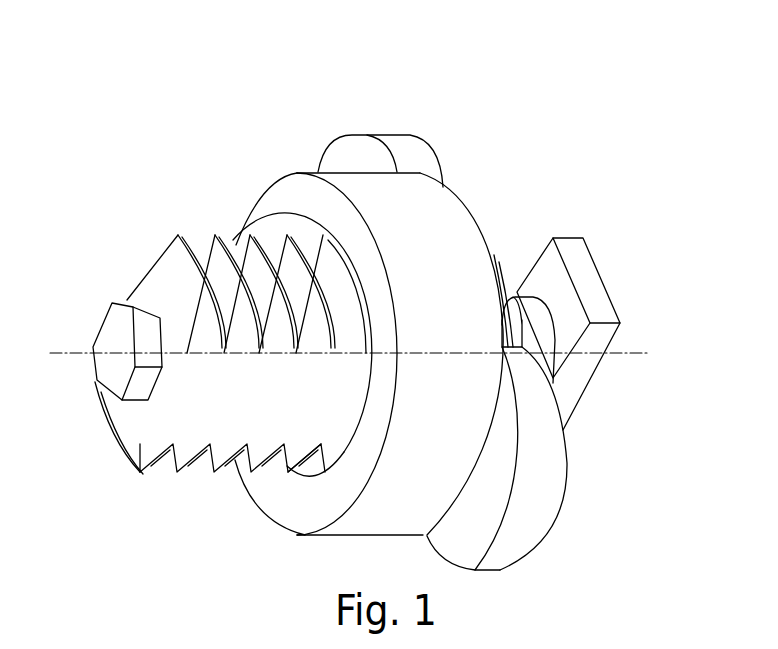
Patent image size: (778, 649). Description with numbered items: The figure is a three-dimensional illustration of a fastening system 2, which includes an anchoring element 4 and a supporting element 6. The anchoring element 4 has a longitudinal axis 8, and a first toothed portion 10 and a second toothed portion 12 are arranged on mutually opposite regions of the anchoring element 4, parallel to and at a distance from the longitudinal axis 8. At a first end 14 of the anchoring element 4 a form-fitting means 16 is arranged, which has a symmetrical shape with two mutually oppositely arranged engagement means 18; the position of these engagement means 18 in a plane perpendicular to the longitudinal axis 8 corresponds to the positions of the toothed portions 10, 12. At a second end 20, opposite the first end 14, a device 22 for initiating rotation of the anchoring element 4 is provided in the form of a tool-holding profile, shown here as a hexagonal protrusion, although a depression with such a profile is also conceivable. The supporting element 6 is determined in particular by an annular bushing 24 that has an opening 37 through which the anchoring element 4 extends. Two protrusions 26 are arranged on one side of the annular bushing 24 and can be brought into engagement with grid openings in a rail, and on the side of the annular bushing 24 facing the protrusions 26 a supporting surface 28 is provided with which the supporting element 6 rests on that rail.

The fastening system 2 is at (378, 87).
The anchoring element 4 is at (135, 297).
The supporting element 6 is at (457, 187).
The longitudinal axis 8 is at (637, 356).
The first toothed portion 10 is at (187, 354).
The second toothed portion 12 is at (143, 430).
The first end 14 is at (604, 258).
The form-fitting means 16 is at (623, 316).
The engagement means 18 is at (550, 273).
The second end 20 is at (123, 293).
The device for initiating rotation 22 is at (108, 372).
The annular bushing 24 is at (287, 214).
The protrusions 26 is at (404, 148).
The supporting surface 28 is at (510, 207).
The opening 37 is at (320, 450).